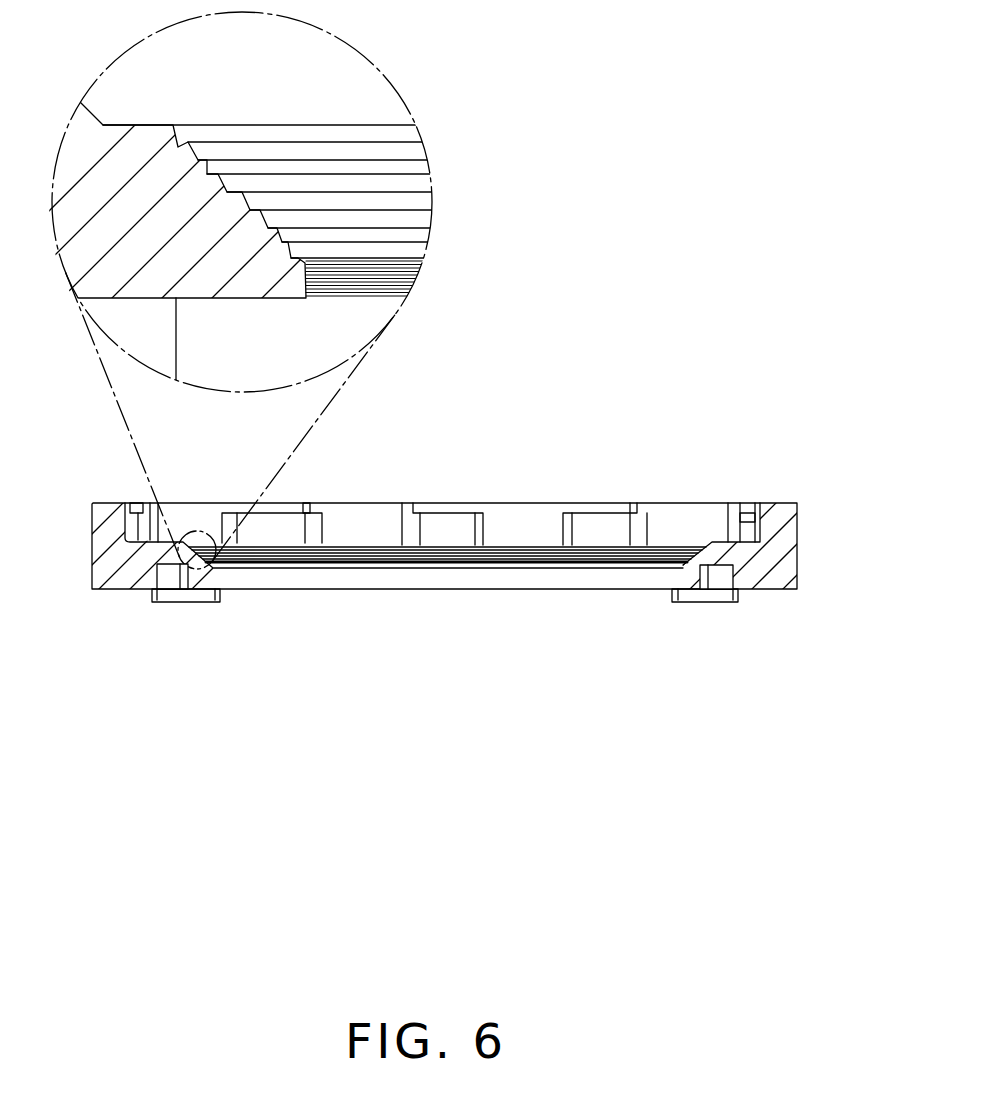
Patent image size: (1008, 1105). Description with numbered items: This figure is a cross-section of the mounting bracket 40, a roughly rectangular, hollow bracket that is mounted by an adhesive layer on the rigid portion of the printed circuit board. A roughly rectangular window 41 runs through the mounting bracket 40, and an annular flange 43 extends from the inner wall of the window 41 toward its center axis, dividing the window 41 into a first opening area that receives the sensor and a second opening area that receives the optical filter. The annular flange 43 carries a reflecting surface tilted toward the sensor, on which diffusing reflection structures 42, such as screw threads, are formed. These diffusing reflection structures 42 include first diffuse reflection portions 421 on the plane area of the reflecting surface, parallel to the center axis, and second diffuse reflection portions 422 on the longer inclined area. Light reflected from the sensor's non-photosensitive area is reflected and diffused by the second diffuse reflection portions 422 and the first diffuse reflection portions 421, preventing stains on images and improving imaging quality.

The mounting bracket 40 is at (508, 424).
The window 41 is at (525, 580).
The diffusing reflection structures 42 is at (321, 231).
The first diffuse reflection portions 421 is at (385, 277).
The second diffuse reflection portions 422 is at (385, 183).
The annular flange 43 is at (712, 555).